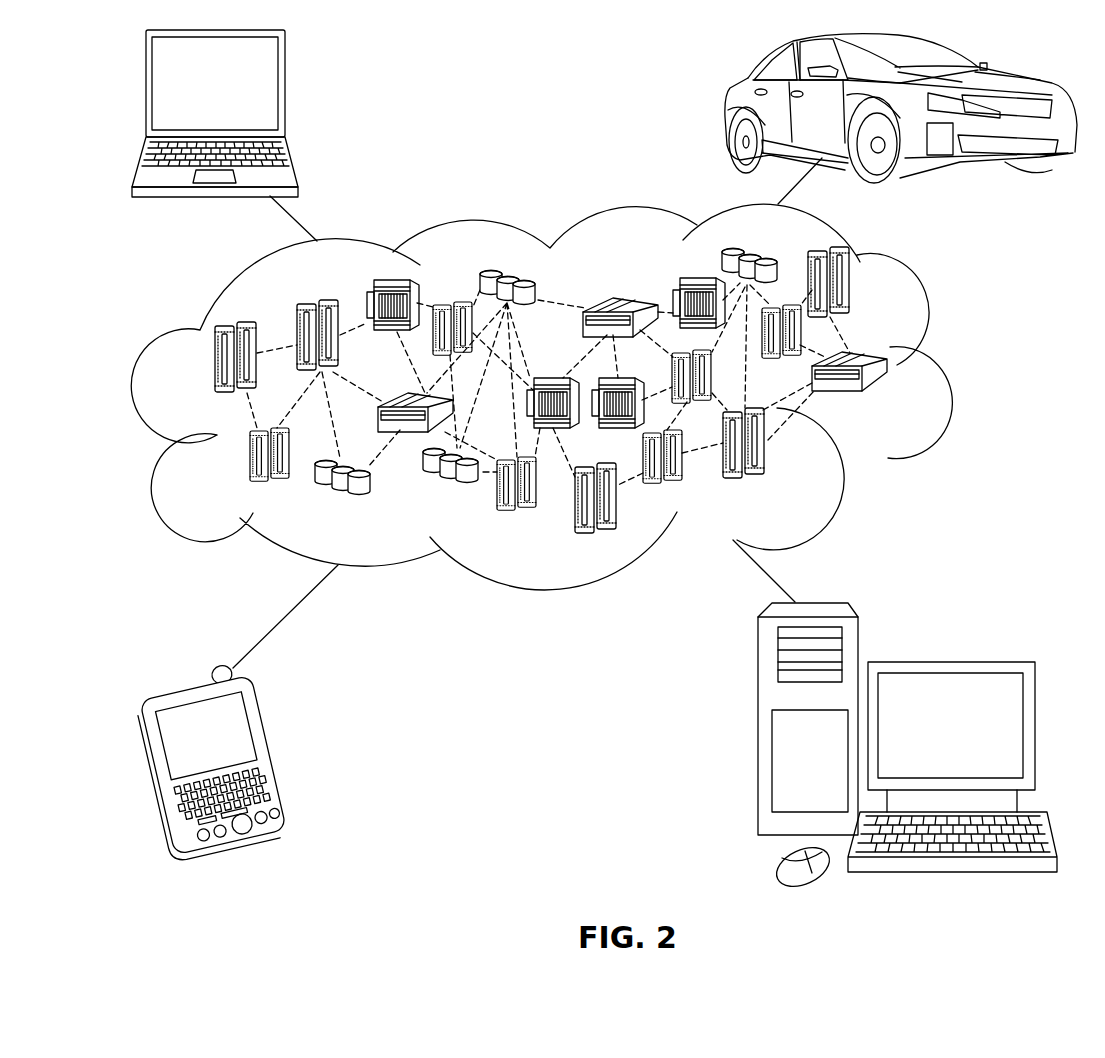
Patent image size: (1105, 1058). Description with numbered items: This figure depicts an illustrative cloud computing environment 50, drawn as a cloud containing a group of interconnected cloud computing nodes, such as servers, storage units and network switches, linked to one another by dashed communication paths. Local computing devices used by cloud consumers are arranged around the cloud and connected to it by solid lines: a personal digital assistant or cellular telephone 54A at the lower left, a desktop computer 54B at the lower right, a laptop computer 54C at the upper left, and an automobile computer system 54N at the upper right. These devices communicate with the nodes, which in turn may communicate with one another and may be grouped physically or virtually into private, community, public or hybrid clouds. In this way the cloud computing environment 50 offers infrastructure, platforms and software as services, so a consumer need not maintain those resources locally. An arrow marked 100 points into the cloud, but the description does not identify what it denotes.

The personal digital assistant (PDA) or cellular telephone 54A is at (275, 757).
The desktop computer 54B is at (948, 660).
The laptop computer 54C is at (285, 92).
The automobile computer system 54N is at (726, 110).
The cloud computing environment 50 is at (948, 372).
The cloud computing nodes 100 is at (888, 398).